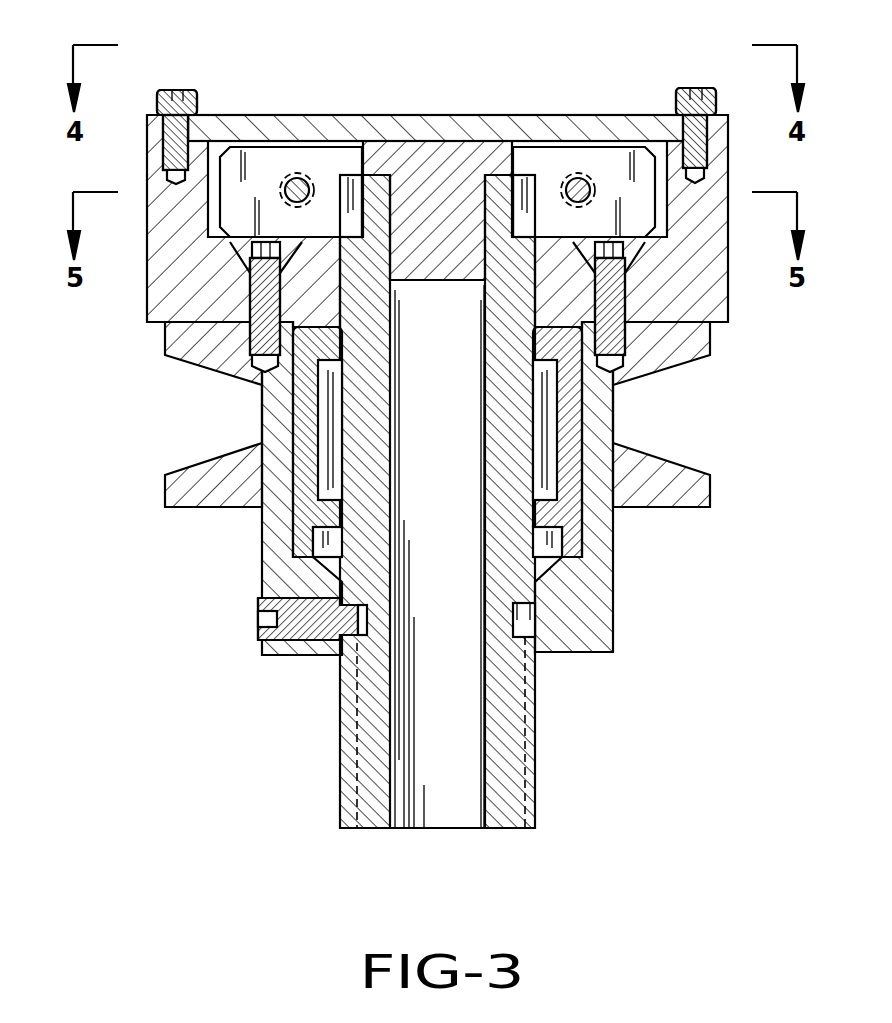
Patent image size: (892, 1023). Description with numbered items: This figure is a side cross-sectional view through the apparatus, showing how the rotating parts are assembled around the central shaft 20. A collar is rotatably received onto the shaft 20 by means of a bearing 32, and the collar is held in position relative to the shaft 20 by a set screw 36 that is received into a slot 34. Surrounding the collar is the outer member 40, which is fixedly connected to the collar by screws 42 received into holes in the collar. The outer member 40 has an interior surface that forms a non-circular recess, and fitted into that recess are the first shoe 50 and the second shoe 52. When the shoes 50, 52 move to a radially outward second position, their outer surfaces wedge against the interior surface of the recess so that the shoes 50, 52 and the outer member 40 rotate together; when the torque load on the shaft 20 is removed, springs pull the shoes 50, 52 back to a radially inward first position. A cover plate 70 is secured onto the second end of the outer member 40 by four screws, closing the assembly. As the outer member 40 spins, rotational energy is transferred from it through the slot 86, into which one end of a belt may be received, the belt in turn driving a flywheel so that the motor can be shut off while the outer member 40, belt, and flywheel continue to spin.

The shaft 20 is at (508, 796).
The bearing 32 is at (327, 463).
The slot 34 is at (525, 620).
The set screw 36 is at (258, 622).
The outer member 40 is at (595, 578).
The screws 42 is at (267, 358).
The first shoe 50 is at (262, 163).
The second shoe 52 is at (584, 192).
The cover plate 70 is at (500, 113).
The slot 86 is at (613, 422).